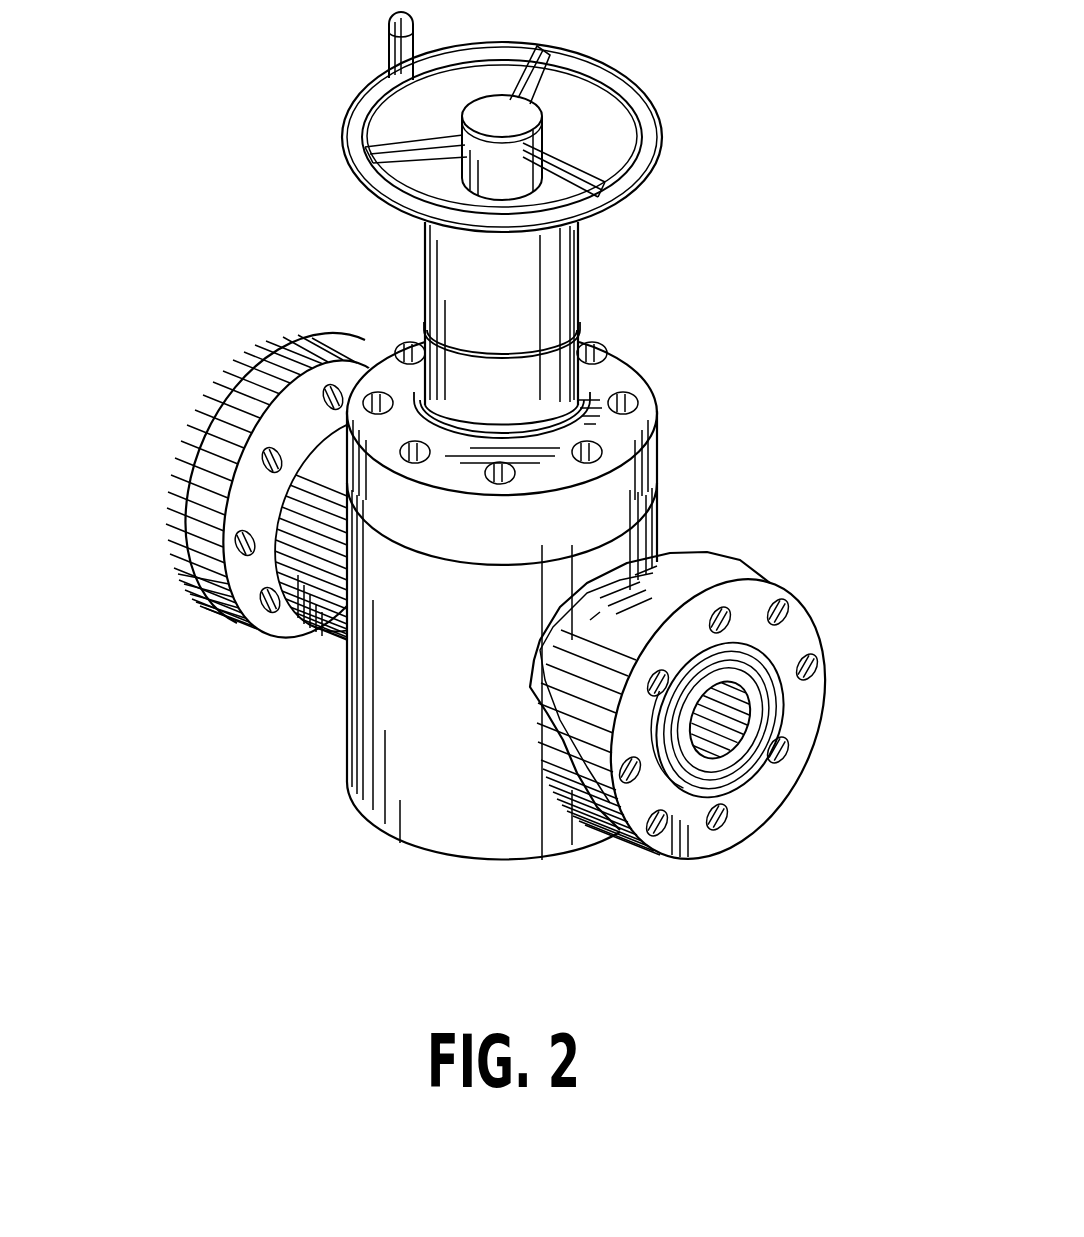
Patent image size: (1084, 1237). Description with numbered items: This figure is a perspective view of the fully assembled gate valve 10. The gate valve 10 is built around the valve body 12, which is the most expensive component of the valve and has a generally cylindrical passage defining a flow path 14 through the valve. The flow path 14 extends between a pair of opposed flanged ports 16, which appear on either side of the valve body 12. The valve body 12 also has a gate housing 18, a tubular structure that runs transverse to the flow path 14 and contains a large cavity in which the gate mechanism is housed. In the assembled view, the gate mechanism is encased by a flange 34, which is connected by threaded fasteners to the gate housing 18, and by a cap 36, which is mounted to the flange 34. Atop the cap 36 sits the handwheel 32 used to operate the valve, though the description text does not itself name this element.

The gate valve 10 is at (514, 511).
The valve body 12 is at (514, 655).
The flow path 14 is at (728, 713).
The flanged ports 16 is at (220, 443).
The gate housing 18 is at (472, 780).
The handwheel 32 is at (627, 88).
The flange 34 is at (645, 460).
The cap 36 is at (553, 277).